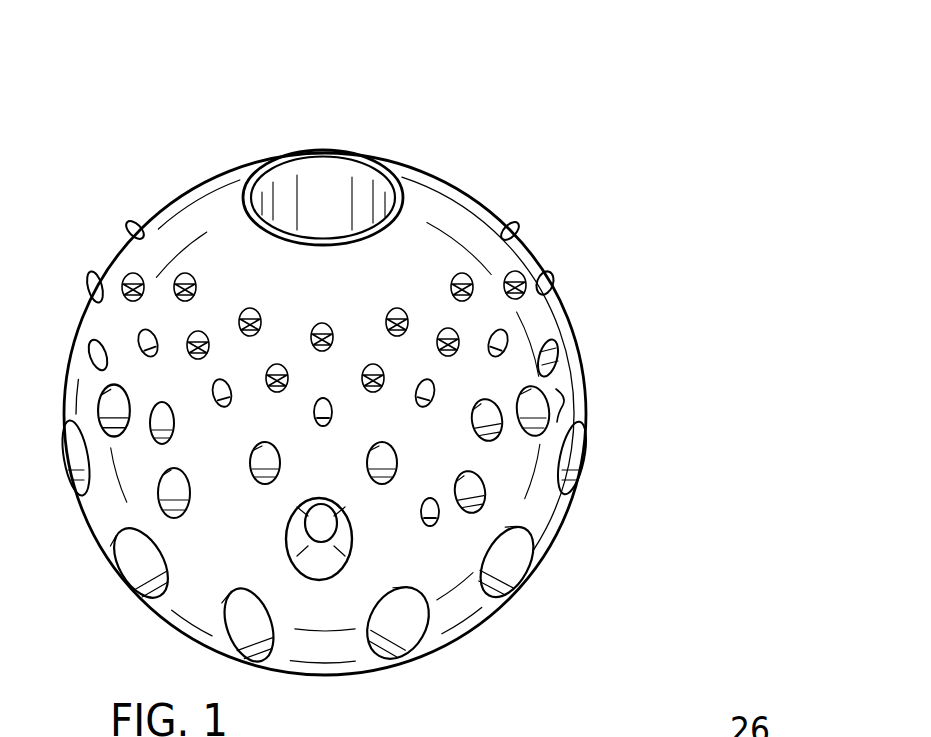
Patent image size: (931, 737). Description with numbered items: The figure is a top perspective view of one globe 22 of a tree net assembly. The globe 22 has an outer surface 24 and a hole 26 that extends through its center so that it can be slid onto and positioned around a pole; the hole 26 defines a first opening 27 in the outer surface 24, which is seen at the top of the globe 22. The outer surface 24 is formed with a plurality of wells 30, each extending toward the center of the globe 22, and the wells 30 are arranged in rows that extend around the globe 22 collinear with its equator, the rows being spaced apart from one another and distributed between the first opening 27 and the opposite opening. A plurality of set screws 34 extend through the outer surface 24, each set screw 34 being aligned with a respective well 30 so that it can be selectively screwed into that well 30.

The globe 22 is at (485, 207).
The outer surface 24 is at (565, 403).
The hole 26 is at (316, 165).
The first opening 27 is at (253, 193).
The well 30 is at (433, 553).
The set screw 34 is at (192, 342).